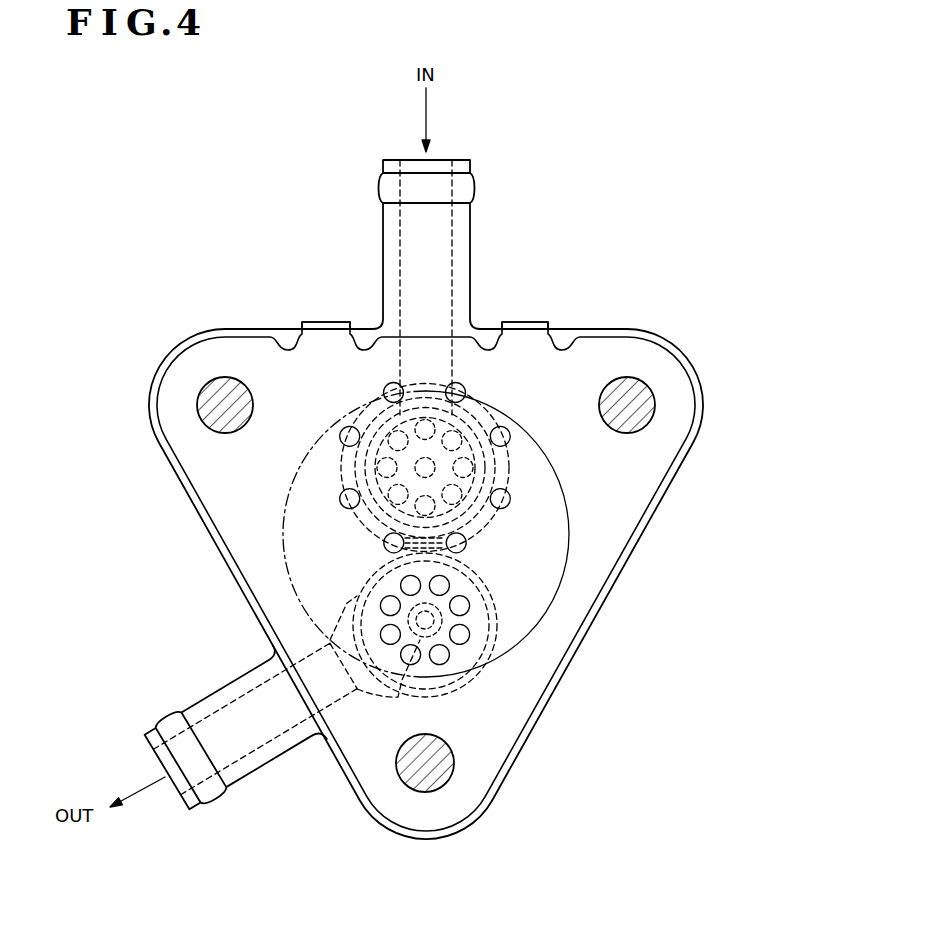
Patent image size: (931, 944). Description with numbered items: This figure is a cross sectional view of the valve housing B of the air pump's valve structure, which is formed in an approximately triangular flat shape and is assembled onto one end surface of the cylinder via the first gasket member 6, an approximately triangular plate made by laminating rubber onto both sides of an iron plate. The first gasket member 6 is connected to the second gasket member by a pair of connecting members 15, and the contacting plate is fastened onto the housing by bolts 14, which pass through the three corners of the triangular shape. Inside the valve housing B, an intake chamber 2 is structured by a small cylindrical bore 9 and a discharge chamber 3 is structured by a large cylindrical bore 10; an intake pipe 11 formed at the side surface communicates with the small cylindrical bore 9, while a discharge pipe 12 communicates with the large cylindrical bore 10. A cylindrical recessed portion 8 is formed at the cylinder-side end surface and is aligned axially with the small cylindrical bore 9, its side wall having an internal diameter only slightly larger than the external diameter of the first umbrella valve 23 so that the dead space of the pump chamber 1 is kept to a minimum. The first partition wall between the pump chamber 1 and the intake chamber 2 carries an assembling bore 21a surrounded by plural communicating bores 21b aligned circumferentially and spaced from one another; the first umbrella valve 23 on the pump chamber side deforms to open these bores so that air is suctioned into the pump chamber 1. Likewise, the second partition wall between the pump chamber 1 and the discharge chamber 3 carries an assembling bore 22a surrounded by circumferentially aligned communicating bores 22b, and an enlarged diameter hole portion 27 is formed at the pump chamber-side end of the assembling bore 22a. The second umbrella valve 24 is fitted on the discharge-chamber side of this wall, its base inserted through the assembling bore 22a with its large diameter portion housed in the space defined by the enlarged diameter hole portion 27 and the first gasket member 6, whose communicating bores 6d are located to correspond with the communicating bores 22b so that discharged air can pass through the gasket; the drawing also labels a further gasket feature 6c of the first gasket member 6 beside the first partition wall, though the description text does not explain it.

The pump chamber 1 is at (458, 548).
The intake chamber 2 is at (457, 468).
The small cylindrical bore 9 is at (492, 424).
The discharge chamber 3 is at (452, 548).
The large cylindrical bore 10 is at (530, 638).
The first gasket member 6 is at (426, 580).
The bolt holes 6c is at (510, 497).
The communicating bores 6d is at (446, 662).
The cylindrical recessed portion 8 is at (444, 548).
The intake pipe 11 is at (472, 247).
The discharge pipe 12 is at (262, 765).
The bolts 14 is at (196, 411).
The connecting members 15 is at (326, 321).
The assembling bore 21a is at (382, 537).
The communicating bores 21b is at (468, 541).
The assembling bore 22a is at (399, 698).
The communicating bores 22b is at (476, 689).
The first umbrella valve 23 is at (382, 396).
The second umbrella valve 24 is at (372, 572).
The enlarged diameter hole portion 27 is at (379, 607).
The valve housing B is at (601, 606).